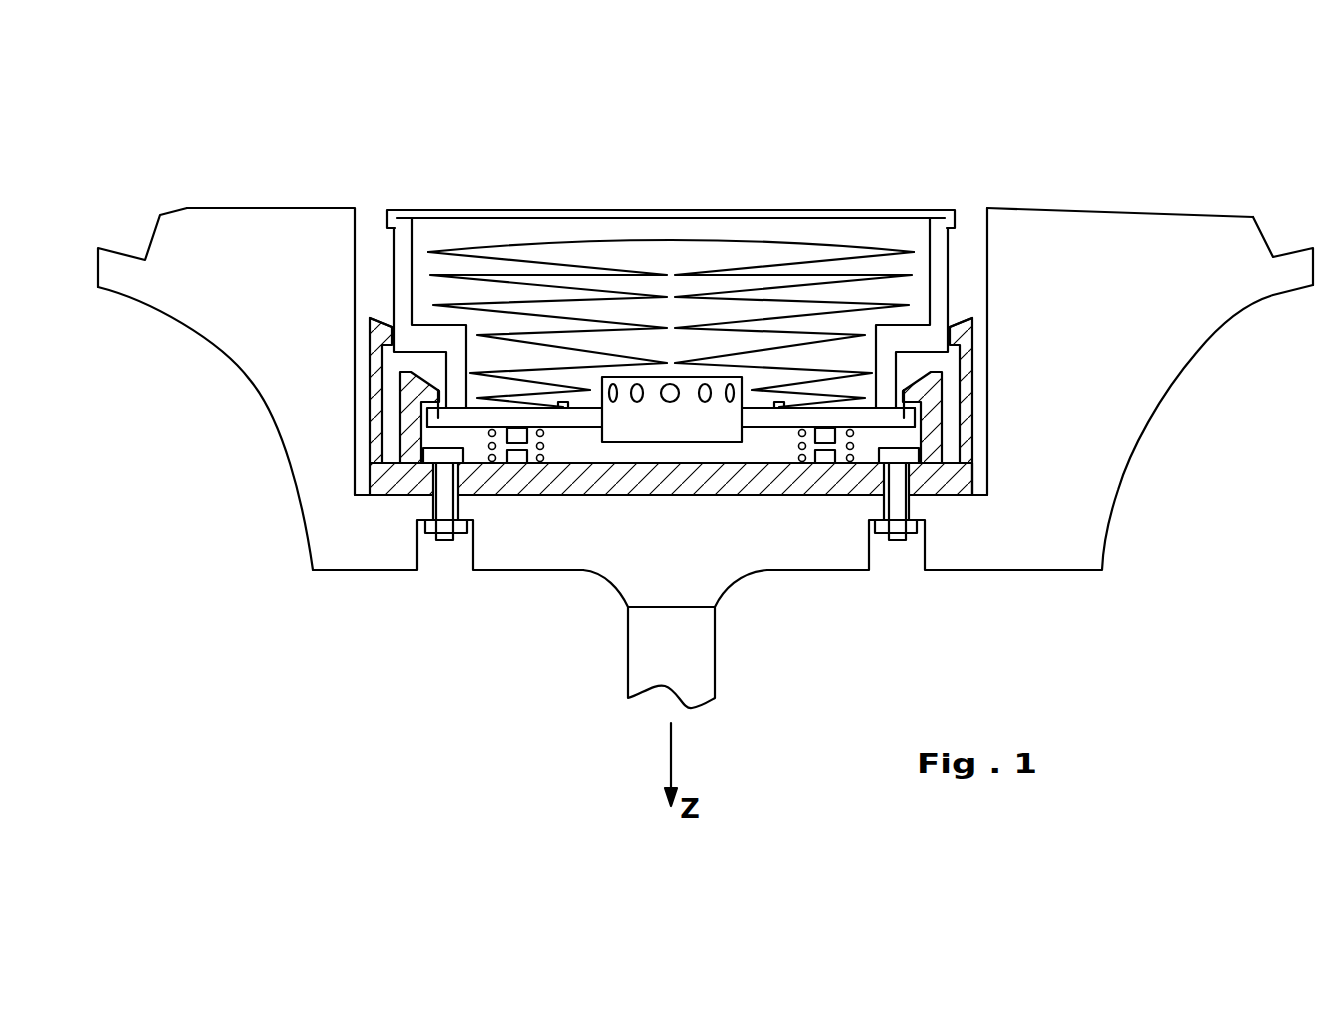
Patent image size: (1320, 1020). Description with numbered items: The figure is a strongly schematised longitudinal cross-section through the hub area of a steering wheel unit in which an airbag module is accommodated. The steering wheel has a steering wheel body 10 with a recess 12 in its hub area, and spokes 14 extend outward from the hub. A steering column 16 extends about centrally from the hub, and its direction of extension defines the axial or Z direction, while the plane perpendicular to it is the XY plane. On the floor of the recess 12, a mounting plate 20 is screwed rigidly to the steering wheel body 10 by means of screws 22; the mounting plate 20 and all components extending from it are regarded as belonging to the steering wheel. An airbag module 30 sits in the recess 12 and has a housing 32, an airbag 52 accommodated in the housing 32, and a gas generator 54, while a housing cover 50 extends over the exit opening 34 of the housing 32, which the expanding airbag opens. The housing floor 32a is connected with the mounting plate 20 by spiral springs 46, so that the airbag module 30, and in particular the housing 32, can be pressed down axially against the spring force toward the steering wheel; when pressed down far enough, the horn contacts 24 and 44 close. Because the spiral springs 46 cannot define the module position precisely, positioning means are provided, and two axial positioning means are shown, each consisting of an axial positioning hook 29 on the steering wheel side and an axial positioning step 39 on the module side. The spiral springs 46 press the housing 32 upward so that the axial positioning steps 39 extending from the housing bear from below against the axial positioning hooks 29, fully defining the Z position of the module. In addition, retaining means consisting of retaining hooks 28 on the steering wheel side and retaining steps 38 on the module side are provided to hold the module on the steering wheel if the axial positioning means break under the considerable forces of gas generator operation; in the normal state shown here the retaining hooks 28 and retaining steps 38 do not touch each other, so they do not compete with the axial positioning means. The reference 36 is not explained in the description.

The steering wheel body 10 is at (1090, 443).
The recess 12 is at (968, 225).
The spokes 14 is at (168, 272).
The steering column 16 is at (683, 653).
The mounting plate 20 is at (748, 490).
The screws 22 is at (447, 541).
The horn contact 24 is at (517, 462).
The retaining hooks 28 is at (408, 427).
The axial positioning hook 29 is at (374, 400).
The airbag module 30 is at (483, 237).
The housing 32 is at (890, 340).
The housing floor 32a is at (763, 428).
The exit opening 34 is at (627, 226).
The side wall 36 is at (938, 265).
The retaining steps 38 is at (438, 400).
The axial positioning step 39 is at (390, 342).
The horn contact 44 is at (515, 430).
The spiral springs 46 is at (492, 433).
The housing cover 50 is at (586, 211).
The airbag 52 is at (711, 270).
The gas generator 54 is at (650, 430).